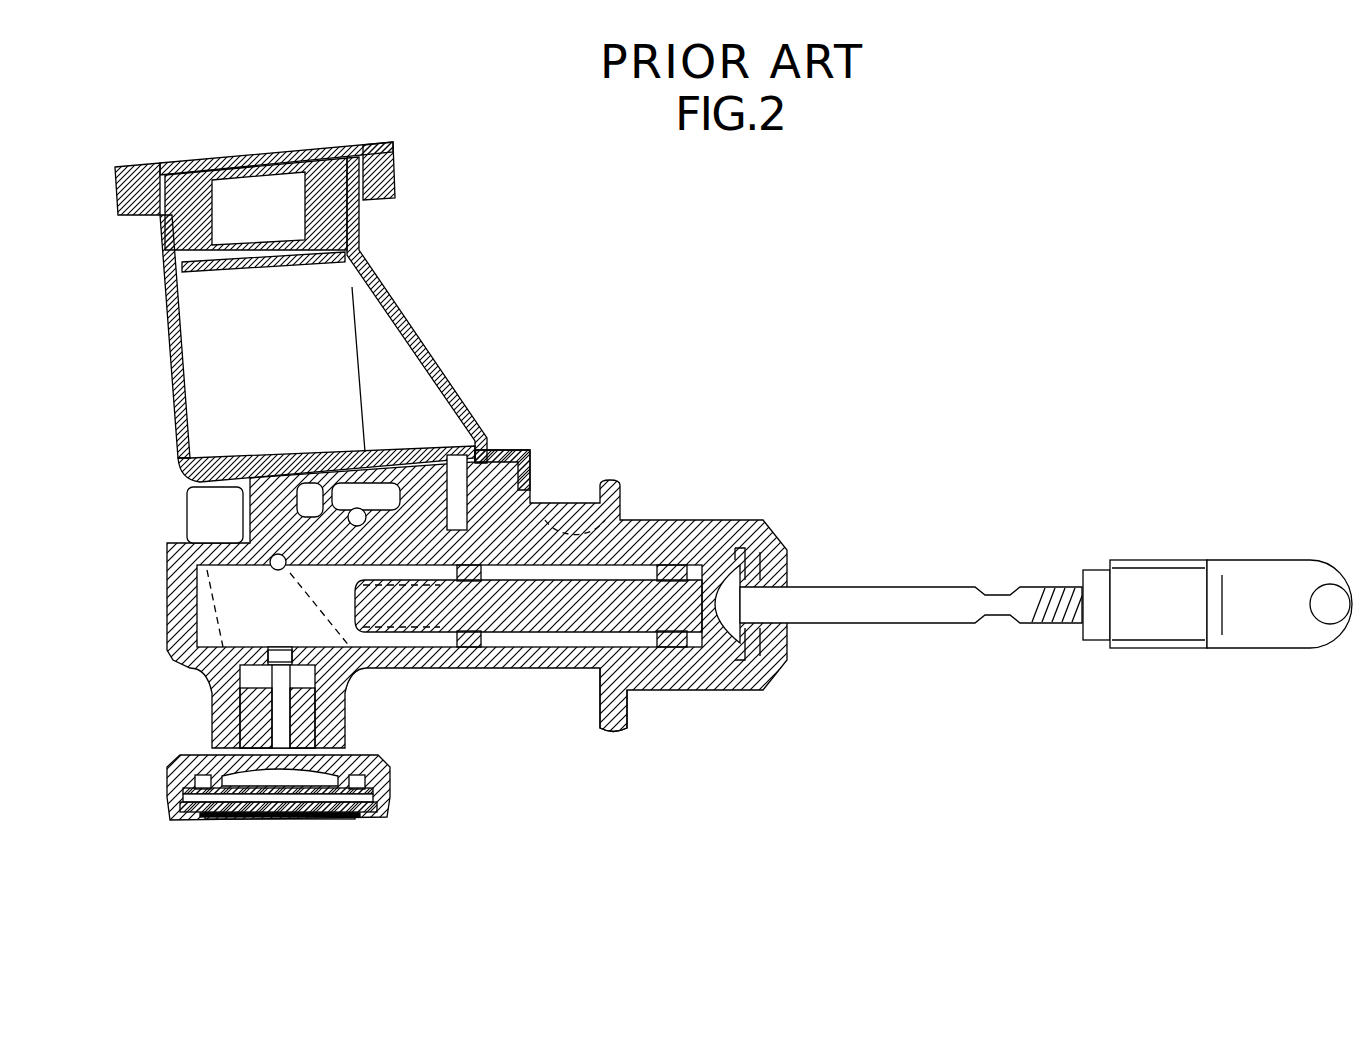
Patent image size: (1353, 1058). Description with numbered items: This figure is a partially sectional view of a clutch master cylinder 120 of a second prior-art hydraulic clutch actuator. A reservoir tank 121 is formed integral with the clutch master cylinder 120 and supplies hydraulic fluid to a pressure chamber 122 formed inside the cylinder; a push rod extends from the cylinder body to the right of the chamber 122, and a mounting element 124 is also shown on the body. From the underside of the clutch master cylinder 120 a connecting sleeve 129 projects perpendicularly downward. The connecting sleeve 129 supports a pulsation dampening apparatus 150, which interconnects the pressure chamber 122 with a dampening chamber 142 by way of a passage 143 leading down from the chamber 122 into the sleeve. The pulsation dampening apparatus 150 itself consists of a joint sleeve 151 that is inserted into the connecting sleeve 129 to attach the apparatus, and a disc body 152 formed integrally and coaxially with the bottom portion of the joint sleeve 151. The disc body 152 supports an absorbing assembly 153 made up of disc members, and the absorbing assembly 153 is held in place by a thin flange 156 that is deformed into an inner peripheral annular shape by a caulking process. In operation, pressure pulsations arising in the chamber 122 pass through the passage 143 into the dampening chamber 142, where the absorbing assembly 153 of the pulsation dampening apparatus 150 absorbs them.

The clutch master cylinder 120 is at (568, 476).
The reservoir tank 121 is at (432, 312).
The pressure chamber 122 is at (883, 593).
The mounting flange 124 is at (557, 615).
The connecting sleeve 129 is at (335, 710).
The dampening chamber 142 is at (277, 733).
The passage 143 is at (277, 657).
The pulsation dampening apparatus 150 is at (143, 795).
The joint sleeve 151 is at (387, 812).
The disc body 152 is at (385, 783).
The absorbing assembly 153 is at (326, 826).
The thin flange 156 is at (368, 822).